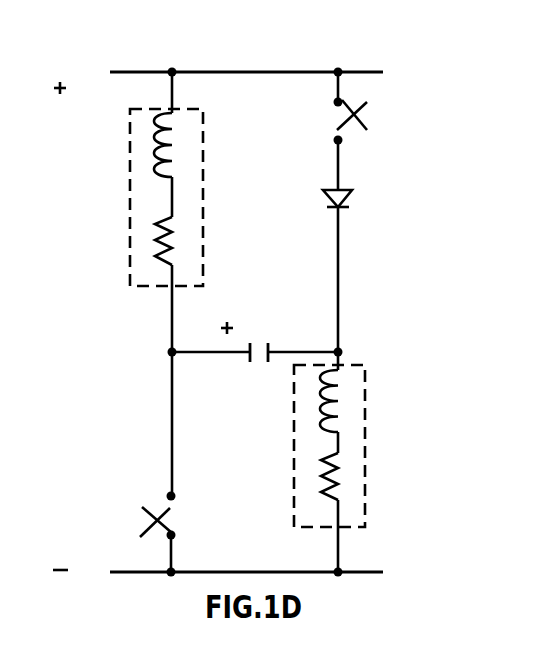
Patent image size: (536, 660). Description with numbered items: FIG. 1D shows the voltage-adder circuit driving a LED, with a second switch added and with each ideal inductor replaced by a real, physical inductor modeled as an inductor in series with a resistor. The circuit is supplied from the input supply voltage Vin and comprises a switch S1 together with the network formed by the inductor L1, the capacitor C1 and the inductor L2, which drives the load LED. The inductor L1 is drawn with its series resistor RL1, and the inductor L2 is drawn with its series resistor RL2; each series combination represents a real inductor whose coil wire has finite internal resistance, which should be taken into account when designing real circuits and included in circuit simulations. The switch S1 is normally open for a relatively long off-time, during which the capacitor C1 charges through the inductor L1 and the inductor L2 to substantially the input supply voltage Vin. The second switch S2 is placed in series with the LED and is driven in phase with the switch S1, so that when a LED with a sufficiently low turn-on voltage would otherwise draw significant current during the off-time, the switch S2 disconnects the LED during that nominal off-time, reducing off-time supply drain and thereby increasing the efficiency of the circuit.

The inductor L1 is at (133, 145).
The series resistor RL1 is at (127, 247).
The input supply voltage Vin is at (62, 345).
The switch S1 is at (143, 518).
The capacitor C1 is at (262, 333).
The second switch S2 is at (371, 120).
The element LED is at (368, 202).
The inductor L2 is at (361, 401).
The series resistor RL2 is at (367, 481).